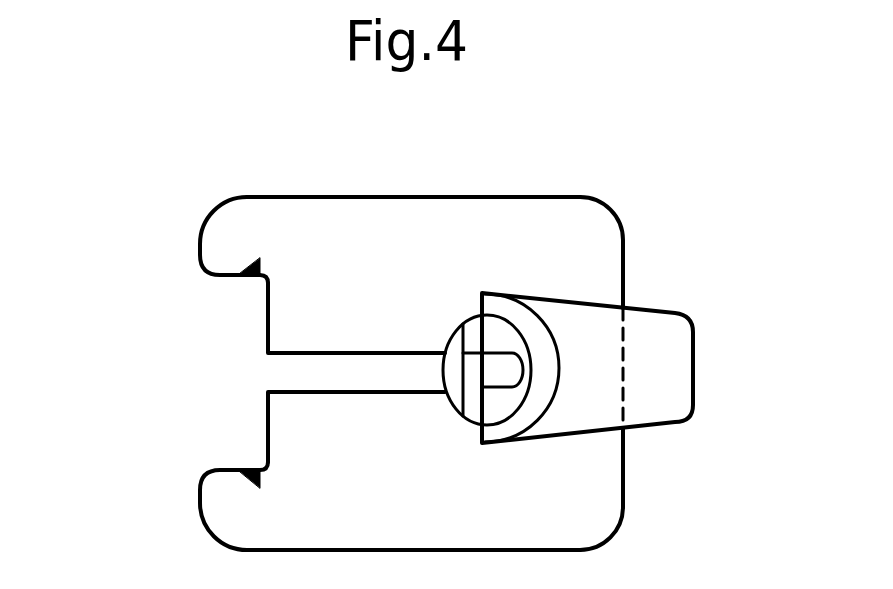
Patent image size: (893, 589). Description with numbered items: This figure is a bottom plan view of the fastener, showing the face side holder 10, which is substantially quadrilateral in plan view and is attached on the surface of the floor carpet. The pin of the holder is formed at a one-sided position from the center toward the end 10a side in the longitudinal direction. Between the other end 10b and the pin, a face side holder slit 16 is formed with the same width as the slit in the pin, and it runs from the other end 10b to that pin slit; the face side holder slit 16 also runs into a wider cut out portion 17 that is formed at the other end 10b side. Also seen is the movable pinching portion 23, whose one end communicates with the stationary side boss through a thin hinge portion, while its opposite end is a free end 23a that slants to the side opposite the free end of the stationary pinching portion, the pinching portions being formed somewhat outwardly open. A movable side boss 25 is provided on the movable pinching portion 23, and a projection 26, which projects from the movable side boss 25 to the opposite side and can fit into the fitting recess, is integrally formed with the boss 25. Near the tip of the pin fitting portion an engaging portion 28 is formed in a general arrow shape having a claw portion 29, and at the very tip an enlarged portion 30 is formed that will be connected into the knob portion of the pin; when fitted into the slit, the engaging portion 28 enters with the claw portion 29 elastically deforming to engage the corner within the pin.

The face side holder 10 is at (342, 226).
The end of face side holder 10a is at (623, 240).
The other end of face side holder 10b is at (200, 250).
The face side holder slit 16 is at (285, 372).
The cut out portion 17 is at (253, 428).
The movable pinching portion 23 is at (562, 415).
The free end 23a is at (670, 372).
The movable side boss 25 is at (500, 402).
The projection 26 is at (458, 398).
The engaging portion 28 is at (478, 349).
The claw portion 29 is at (490, 345).
The enlarged portion 30 is at (530, 365).